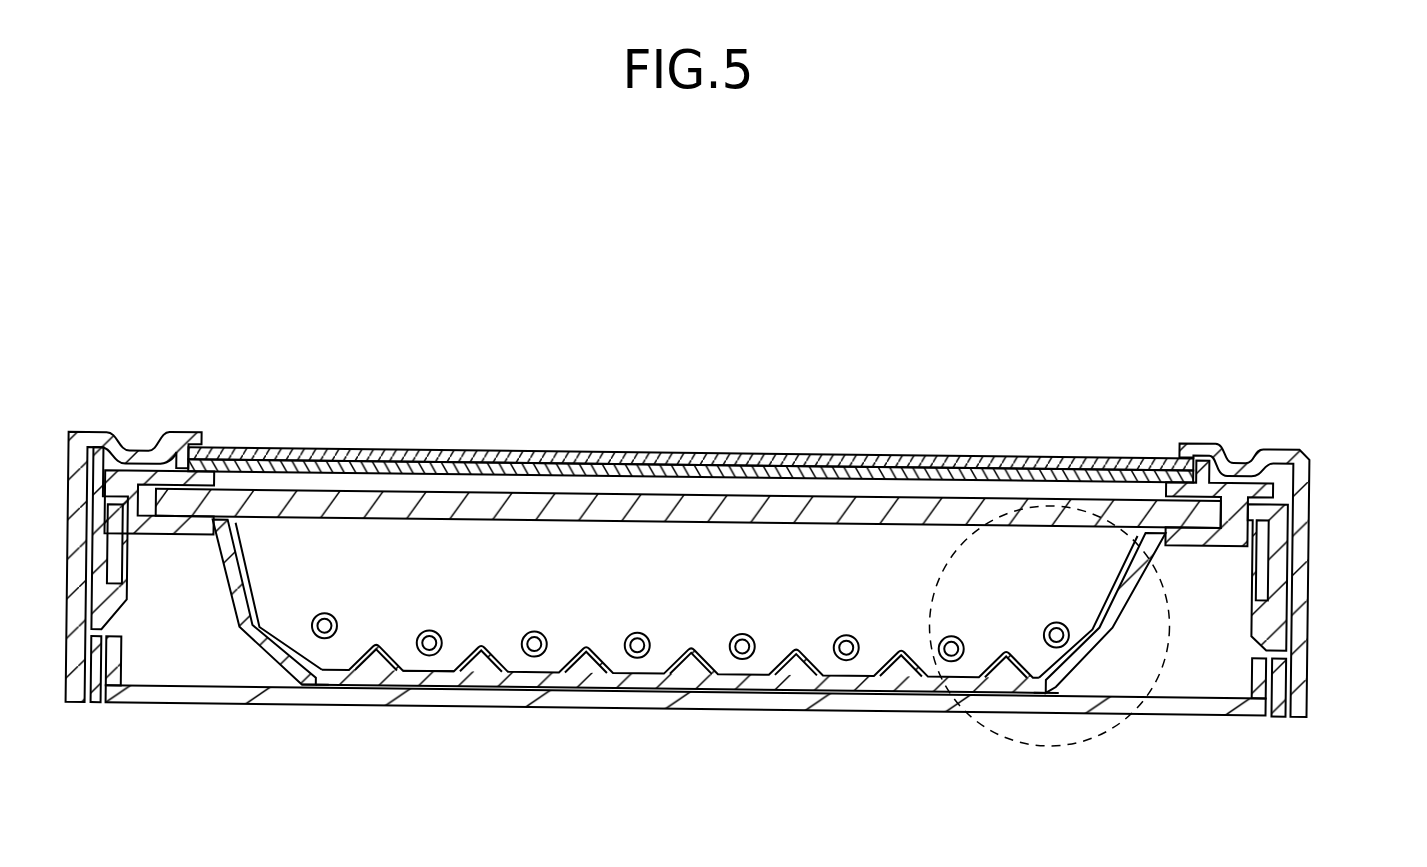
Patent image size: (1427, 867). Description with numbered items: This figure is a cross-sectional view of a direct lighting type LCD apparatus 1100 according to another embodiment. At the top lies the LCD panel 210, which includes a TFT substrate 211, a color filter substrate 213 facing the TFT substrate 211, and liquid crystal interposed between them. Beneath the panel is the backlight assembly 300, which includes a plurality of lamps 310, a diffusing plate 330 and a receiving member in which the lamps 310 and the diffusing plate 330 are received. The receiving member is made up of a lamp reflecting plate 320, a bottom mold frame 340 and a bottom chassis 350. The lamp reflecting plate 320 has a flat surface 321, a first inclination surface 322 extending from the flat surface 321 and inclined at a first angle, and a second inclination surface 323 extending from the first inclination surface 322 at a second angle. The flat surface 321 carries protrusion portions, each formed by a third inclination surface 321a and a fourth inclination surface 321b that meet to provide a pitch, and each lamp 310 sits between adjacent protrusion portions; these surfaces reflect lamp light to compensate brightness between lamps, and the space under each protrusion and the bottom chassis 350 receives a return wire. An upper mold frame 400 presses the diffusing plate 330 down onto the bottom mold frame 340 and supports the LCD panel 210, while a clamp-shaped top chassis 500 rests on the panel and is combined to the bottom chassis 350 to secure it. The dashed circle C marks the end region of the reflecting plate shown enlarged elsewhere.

The display apparatus 1100 is at (800, 253).
The LCD panel 210 is at (750, 363).
The TFT substrate 211 is at (610, 453).
The color filter substrate 213 is at (730, 453).
The backlight assembly 300 is at (883, 765).
The lamp 310 is at (638, 660).
The lamp reflecting plate 320 is at (711, 678).
The flat surface 321 is at (845, 684).
The third inclination surface 321a is at (403, 684).
The fourth inclination surface 321b is at (450, 686).
The first inclination surface 322 is at (316, 698).
The second inclination surface 323 is at (217, 584).
The diffusing plate 330 is at (563, 518).
The bottom mold frame 340 is at (1268, 501).
The bottom chassis 350 is at (785, 702).
The upper mold frame 400 is at (1270, 488).
The top chassis 500 is at (1285, 450).
The enlarged region C is at (985, 726).